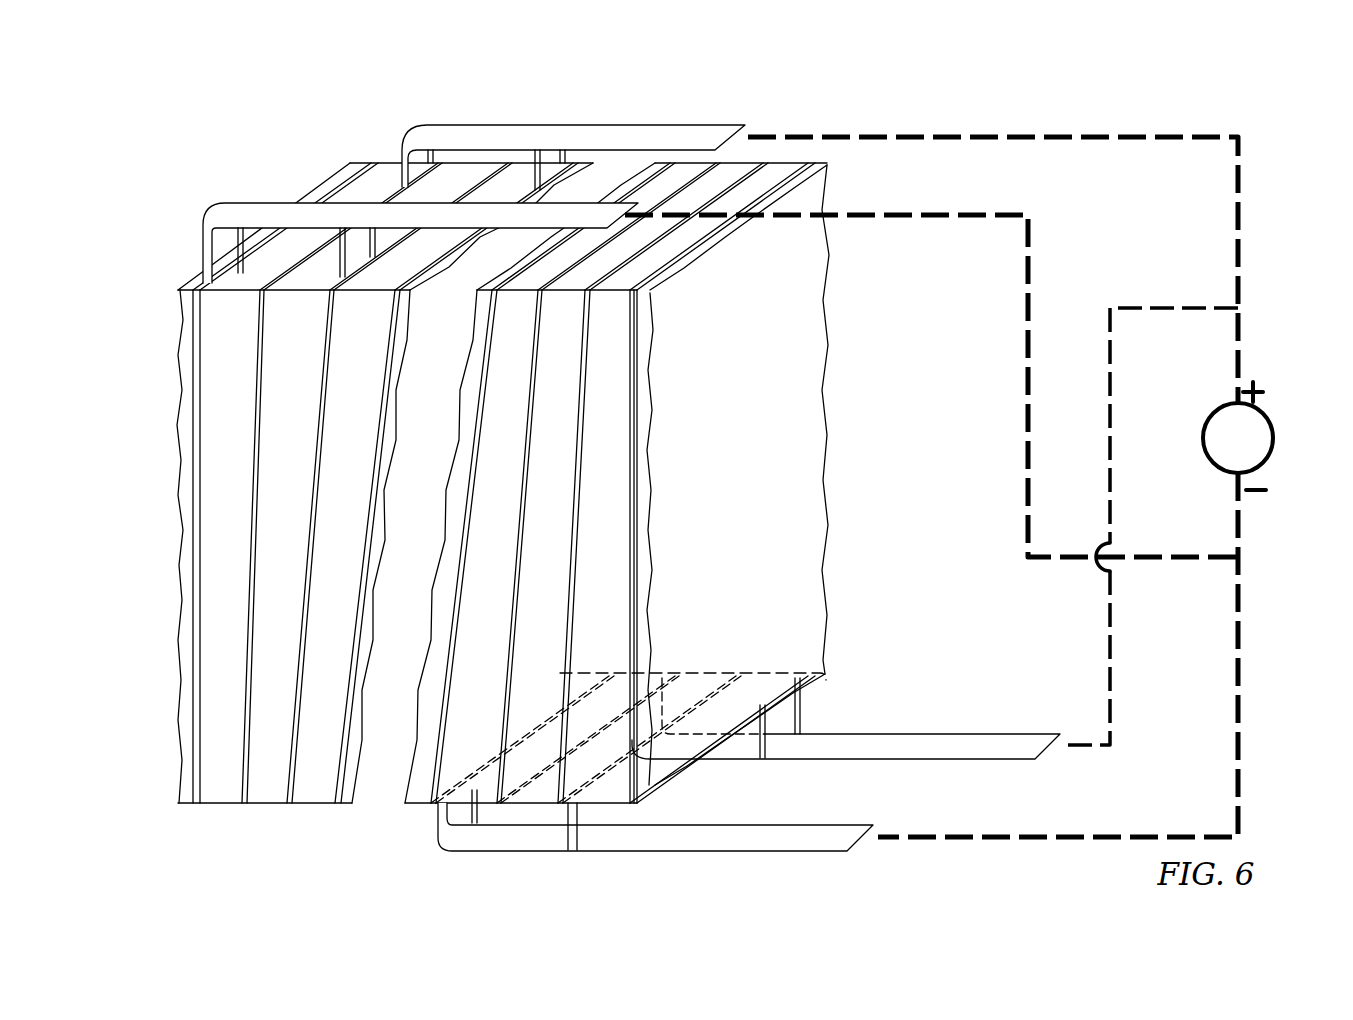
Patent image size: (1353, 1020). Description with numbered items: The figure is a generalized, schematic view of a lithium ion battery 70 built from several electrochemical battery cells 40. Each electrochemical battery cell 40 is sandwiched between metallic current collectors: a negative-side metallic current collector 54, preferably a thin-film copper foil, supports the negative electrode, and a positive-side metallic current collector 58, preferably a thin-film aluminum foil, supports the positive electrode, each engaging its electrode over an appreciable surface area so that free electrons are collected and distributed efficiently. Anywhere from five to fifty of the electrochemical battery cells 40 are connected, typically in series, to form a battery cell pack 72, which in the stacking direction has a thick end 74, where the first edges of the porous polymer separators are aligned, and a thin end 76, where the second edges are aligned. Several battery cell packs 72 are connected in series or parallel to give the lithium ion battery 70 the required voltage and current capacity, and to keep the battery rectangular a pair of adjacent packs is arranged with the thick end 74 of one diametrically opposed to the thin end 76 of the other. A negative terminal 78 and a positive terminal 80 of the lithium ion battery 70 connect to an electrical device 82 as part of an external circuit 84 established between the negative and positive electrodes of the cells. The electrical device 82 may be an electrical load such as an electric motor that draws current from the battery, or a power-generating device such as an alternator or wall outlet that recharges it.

The electrochemical battery cell 40 is at (220, 790).
The negative-side metallic current collector 54 is at (196, 460).
The positive-side metallic current collector 58 is at (258, 392).
The lithium ion battery 70 is at (573, 474).
The battery cell pack 72 is at (631, 478).
The thick end 74 is at (163, 303).
The thin end 76 is at (845, 175).
The negative terminal 78 is at (270, 213).
The positive terminal 80 is at (625, 135).
The electrical device 82 is at (1248, 438).
The external circuit 84 is at (979, 487).